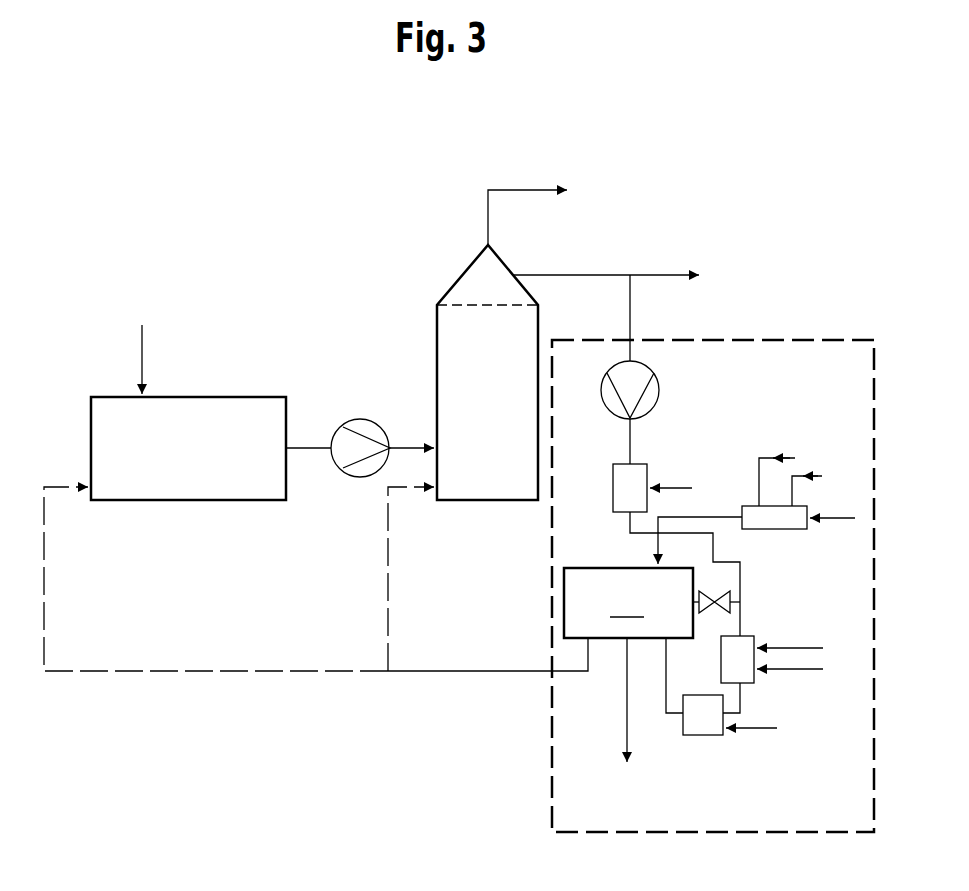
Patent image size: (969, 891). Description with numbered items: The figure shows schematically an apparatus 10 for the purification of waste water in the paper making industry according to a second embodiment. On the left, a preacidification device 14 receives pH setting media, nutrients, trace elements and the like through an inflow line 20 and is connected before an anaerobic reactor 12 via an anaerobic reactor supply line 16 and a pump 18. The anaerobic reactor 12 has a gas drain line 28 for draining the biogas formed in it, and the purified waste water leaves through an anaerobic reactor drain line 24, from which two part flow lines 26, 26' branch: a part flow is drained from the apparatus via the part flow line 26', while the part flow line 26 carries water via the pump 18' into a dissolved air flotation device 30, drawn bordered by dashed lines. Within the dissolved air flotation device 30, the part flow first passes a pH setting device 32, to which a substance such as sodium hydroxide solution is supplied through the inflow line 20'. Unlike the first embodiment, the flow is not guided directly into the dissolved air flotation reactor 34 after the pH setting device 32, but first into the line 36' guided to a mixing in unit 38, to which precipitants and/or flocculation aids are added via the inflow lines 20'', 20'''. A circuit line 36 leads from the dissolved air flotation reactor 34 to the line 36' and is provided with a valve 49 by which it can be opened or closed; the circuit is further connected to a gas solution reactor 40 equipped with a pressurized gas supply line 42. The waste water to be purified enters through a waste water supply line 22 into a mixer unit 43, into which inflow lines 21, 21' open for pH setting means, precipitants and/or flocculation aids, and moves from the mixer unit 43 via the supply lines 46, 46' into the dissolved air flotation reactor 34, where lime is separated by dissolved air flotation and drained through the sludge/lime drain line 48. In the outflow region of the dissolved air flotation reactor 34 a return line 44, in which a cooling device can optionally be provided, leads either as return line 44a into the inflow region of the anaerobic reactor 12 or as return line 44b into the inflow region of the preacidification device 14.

The apparatus for waste water purification 10 is at (289, 255).
The anaerobic reactor 12 is at (434, 342).
The preacidification device 14 is at (218, 413).
The anaerobic reactor supply line 16 is at (305, 448).
The pump 18 is at (382, 421).
The pump 18' is at (667, 390).
The inflow line 20 is at (107, 354).
The inflow line 20' is at (690, 461).
The inflow line 20'' is at (817, 629).
The inflow line 20''' is at (819, 696).
The inflow line 21 is at (830, 466).
The inflow line 21' is at (798, 457).
The waste water supply line 22 is at (834, 518).
The anaerobic reactor drain line 24 is at (594, 275).
The part flow line 26 is at (672, 318).
The part flow line 26' is at (684, 245).
The gas drain line 28 is at (528, 190).
The dissolved air flotation device 30 is at (813, 332).
The pH setting device 32 is at (618, 482).
The dissolved air flotation reactor 34 is at (628, 603).
The circuit line 36 is at (751, 589).
The line 36' is at (780, 613).
The mixing in unit 38 is at (745, 672).
The gas solution reactor 40 is at (706, 718).
The pressurized gas supply line 42 is at (760, 728).
The mixer unit 43 is at (795, 522).
The return line 44 is at (448, 672).
The return line into the anaerobic reactor 44a is at (388, 561).
The return line into the preacidification reactor 44b is at (157, 672).
The dissolved air flotation supply line 46 is at (705, 498).
The dissolved air flotation supply line 46' is at (730, 584).
The sludge/lime drain line 48 is at (626, 722).
The valve 49 is at (716, 610).